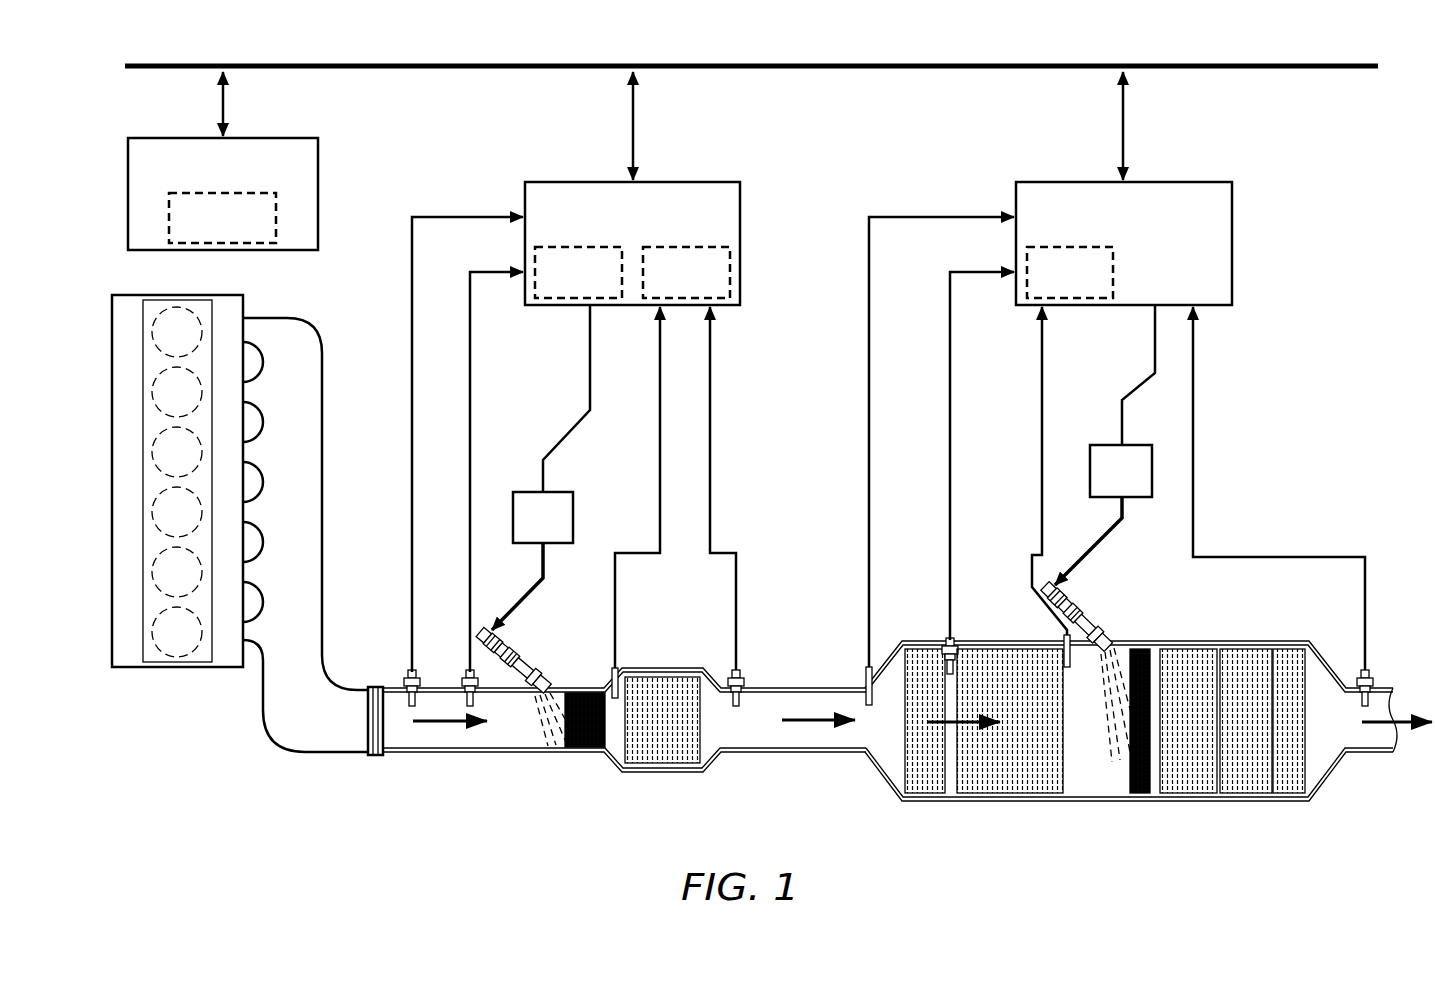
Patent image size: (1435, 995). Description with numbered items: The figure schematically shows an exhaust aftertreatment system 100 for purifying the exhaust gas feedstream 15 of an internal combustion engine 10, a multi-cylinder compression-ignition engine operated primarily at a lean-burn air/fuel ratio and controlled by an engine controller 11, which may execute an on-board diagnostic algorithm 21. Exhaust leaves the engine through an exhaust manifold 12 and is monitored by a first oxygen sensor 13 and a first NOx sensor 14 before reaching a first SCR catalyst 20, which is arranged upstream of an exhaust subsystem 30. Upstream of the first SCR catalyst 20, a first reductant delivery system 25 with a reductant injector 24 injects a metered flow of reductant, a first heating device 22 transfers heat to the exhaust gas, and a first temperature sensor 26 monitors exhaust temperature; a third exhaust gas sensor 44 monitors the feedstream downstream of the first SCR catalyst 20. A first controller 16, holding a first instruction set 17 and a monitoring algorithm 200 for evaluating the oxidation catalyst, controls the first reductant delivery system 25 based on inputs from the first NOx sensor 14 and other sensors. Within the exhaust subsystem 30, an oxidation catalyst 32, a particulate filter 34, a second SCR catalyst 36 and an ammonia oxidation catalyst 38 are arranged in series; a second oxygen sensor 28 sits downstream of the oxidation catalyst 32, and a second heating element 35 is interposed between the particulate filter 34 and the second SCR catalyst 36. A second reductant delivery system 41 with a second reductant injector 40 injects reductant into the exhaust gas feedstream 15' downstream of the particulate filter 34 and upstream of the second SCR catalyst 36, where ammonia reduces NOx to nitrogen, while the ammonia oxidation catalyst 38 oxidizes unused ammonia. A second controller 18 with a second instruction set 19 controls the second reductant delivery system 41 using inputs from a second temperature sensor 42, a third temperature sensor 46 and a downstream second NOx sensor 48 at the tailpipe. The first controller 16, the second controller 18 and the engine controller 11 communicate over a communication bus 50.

The internal combustion engine 10 is at (118, 295).
The engine controller 11 is at (238, 176).
The on-board diagnostic algorithm 21 is at (238, 229).
The exhaust manifold 12 is at (303, 320).
The first oxygen sensor 13 is at (463, 690).
The first NOx sensor 14 is at (407, 688).
The exhaust gas feedstream 15 is at (910, 767).
The exhaust gas feedstream 15' is at (964, 786).
The first controller 16 is at (648, 222).
The first instruction set 17 is at (594, 284).
The monitoring algorithm 200 is at (709, 284).
The second controller 18 is at (1139, 222).
The second instruction set 19 is at (1085, 284).
The first selective catalytic reduction catalyst 20 is at (664, 733).
The first heating device 22 is at (583, 747).
The reductant injector 24 is at (493, 643).
The first reductant delivery system 25 is at (558, 528).
The first temperature sensor 26 is at (615, 668).
The second oxygen sensor 28 is at (945, 636).
The exhaust subsystem 30 is at (874, 766).
The oxidation catalyst 32 is at (927, 770).
The particulate filter 34 is at (1003, 773).
The second heating element 35 is at (1137, 777).
The second SCR catalyst 36 is at (1248, 777).
The ammonia oxidation catalyst 38 is at (1287, 777).
The second reductant injector 40 is at (1077, 600).
The second reductant delivery system 41 is at (1136, 482).
The second temperature sensor 42 is at (862, 688).
The third exhaust gas sensor 44 is at (742, 683).
The third temperature sensor 46 is at (1062, 637).
The second NOx sensor 48 is at (1372, 683).
The communication bus 50 is at (988, 62).
The exhaust aftertreatment system 100 is at (801, 660).